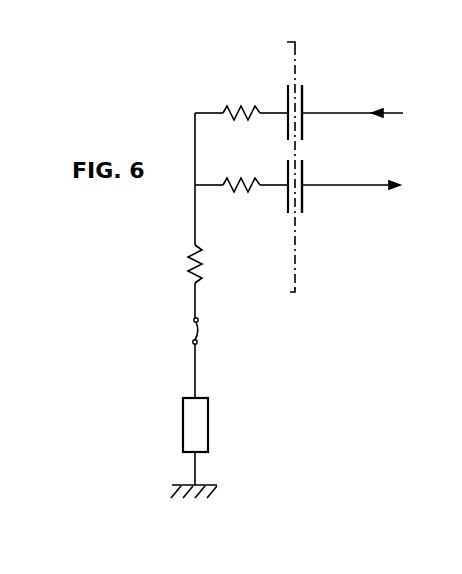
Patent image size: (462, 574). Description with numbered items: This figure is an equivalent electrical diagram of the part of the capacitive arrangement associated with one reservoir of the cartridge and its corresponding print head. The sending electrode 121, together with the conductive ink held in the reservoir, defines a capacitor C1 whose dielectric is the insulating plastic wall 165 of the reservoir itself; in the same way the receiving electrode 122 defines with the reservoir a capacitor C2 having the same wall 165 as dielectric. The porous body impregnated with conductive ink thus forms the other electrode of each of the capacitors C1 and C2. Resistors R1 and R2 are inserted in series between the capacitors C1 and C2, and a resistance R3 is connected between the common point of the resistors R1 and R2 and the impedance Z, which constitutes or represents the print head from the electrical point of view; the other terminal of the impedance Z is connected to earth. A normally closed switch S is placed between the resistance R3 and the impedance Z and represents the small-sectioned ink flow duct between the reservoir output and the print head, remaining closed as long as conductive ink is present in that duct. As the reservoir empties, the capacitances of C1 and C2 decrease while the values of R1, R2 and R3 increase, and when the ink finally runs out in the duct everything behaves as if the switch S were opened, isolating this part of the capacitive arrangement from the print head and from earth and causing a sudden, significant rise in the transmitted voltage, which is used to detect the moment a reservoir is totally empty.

The sending electrode 121 is at (302, 93).
The receiving electrode 122 is at (302, 200).
The wall 165 is at (297, 270).
The resistor R1 is at (235, 100).
The resistor R2 is at (235, 172).
The resistance R3 is at (169, 264).
The capacitor C1 is at (287, 93).
The capacitor C2 is at (285, 201).
The normally closed switch S is at (198, 329).
The impedance Z is at (208, 420).